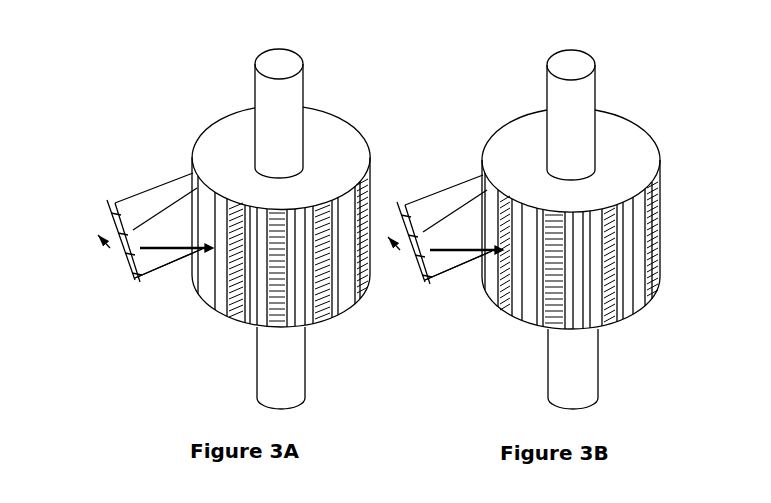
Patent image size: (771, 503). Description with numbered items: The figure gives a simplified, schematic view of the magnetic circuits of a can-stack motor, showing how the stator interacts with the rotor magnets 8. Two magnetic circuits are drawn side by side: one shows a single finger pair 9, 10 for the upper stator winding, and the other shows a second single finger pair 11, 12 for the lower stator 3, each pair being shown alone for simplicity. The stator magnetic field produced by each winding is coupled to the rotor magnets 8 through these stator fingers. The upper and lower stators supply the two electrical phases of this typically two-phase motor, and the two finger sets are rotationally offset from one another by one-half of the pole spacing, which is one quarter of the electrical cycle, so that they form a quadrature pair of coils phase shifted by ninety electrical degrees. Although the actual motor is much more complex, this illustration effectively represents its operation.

In FIG. 3A, the lower stator stack 3 is at (305, 397).
In FIG. 3B, the lower stator stack 3 is at (545, 400).
In FIG. 3A, the rotor magnets 8 is at (338, 112).
In FIG. 3B, the rotor magnets 8 is at (513, 112).
In FIG. 3A, the finger of upper stator finger pair 9 is at (160, 176).
In FIG. 3A, the finger of upper stator finger pair 10 is at (162, 277).
In FIG. 3B, the finger of lower stator finger pair 11 is at (463, 175).
In FIG. 3B, the finger of lower stator finger pair 12 is at (450, 277).